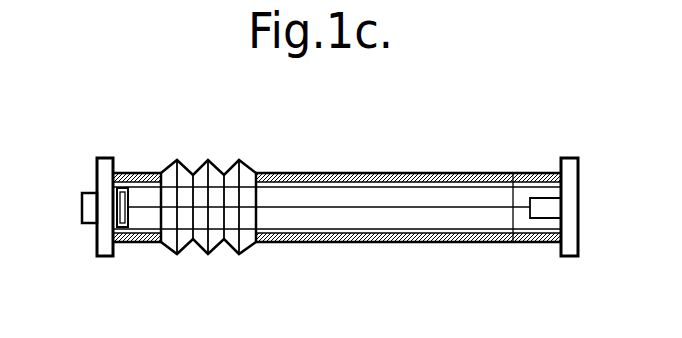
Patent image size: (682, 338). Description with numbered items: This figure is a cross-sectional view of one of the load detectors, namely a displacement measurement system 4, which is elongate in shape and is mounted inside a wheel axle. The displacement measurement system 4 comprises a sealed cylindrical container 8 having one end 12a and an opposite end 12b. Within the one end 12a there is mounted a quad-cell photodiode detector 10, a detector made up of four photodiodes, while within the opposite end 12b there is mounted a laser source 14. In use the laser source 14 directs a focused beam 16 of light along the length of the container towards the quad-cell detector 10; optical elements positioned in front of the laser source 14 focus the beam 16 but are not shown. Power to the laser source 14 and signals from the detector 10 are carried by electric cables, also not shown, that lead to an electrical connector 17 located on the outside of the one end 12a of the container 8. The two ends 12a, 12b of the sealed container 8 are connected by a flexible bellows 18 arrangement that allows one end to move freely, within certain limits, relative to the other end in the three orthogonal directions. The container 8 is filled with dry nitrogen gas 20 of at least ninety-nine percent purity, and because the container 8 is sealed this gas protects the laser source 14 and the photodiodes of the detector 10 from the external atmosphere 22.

The displacement measurement system 4 is at (145, 158).
The sealed cylindrical container 8 is at (423, 174).
The quad-cell photodiode detector 10 is at (125, 210).
The first end of container 12a is at (100, 240).
The opposite end of container 12b is at (567, 207).
The laser source 14 is at (542, 210).
The focused beam of light 16 is at (347, 207).
The electrical connector 17 is at (85, 207).
The flexible bellows arrangement 18 is at (181, 165).
The dry nitrogen gas 20 is at (297, 190).
The external atmosphere 22 is at (399, 123).